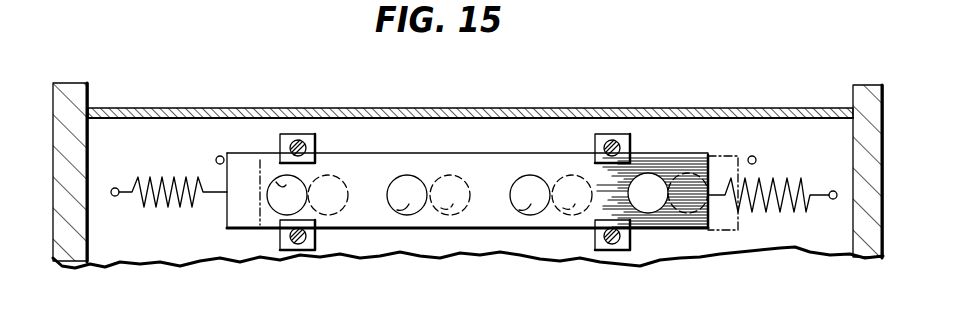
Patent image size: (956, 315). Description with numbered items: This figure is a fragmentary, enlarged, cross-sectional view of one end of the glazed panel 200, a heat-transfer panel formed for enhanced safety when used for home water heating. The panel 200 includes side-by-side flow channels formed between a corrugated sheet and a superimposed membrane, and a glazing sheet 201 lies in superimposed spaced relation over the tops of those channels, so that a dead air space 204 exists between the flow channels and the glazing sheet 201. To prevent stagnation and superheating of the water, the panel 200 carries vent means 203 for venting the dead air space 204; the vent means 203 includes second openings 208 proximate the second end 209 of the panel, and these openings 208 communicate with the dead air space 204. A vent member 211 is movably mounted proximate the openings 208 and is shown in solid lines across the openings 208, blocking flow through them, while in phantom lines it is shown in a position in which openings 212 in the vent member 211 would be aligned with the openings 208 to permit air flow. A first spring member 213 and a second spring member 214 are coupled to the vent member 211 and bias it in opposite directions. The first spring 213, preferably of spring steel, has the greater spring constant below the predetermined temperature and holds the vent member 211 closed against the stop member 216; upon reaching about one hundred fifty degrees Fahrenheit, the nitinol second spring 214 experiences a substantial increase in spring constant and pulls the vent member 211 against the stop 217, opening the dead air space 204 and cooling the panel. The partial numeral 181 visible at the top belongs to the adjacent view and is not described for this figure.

The element of adjacent figure 181 is at (143, 0).
The glazed panel 200 is at (133, 81).
The glazing sheet 201 is at (607, 110).
The vent means 203 is at (421, 142).
The dead air space 204 is at (772, 154).
The second openings 208 is at (453, 213).
The second end 209 is at (343, 132).
The vent member 211 is at (259, 207).
The openings in vent member 212 is at (280, 185).
The first spring member 213 is at (163, 207).
The second spring member 214 is at (778, 207).
The stop member 216 is at (215, 159).
The stop 217 is at (757, 159).